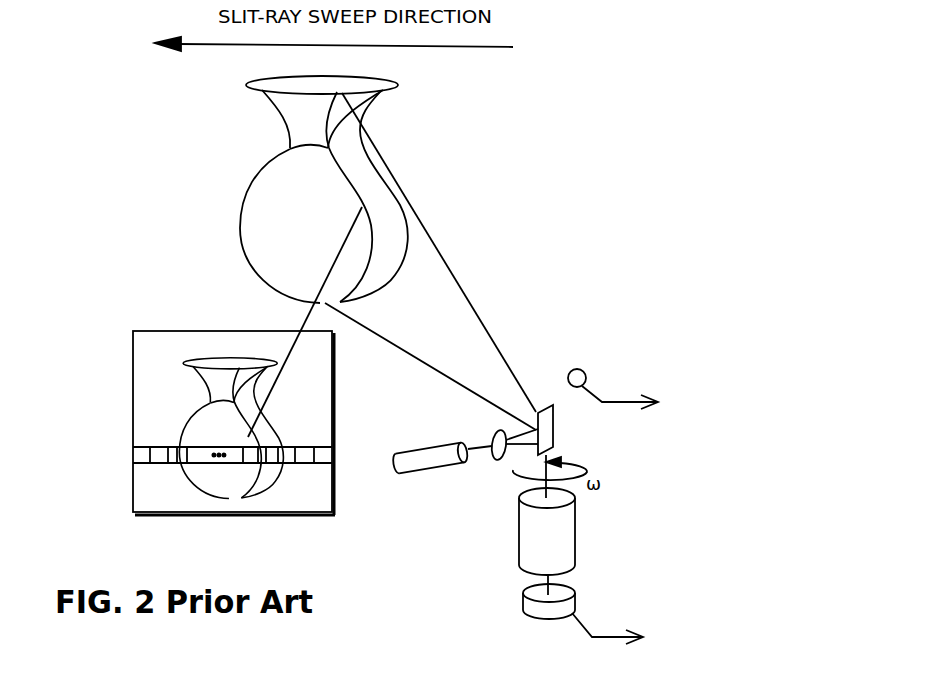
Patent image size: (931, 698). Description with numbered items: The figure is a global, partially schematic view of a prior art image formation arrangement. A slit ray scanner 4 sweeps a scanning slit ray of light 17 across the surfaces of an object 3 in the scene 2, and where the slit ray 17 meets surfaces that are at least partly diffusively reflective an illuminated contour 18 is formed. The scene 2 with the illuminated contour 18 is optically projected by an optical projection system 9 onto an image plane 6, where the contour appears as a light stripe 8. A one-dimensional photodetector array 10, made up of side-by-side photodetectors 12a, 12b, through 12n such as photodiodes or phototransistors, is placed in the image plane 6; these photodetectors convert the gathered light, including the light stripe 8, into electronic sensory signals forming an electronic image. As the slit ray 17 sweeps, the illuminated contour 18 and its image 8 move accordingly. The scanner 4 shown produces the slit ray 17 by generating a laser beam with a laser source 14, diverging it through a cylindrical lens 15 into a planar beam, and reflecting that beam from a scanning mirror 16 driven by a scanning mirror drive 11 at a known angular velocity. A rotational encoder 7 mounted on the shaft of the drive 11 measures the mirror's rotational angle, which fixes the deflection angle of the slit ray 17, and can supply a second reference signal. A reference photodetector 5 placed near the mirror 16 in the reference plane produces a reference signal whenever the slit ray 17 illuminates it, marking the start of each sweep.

The scene 2 is at (437, 97).
The object 3 is at (238, 233).
The slit ray scanner 4 is at (540, 365).
The reference photodetector 5 is at (584, 371).
The image plane 6 is at (148, 363).
The rotational encoder 7 is at (523, 594).
The light stripe 8 is at (243, 485).
The optical projection system 9 is at (320, 302).
The one-dimensional photodetector array 10 is at (145, 447).
The scanning mirror drive 11 is at (575, 540).
The photodetector 12a is at (137, 457).
The photodetector 12b is at (160, 465).
The photodetector 12n is at (328, 458).
The laser source 14 is at (400, 467).
The cylindrical lens 15 is at (495, 458).
The scanning mirror 16 is at (553, 433).
The scanning slit ray 17 is at (433, 243).
The illuminated contour 18 is at (290, 150).